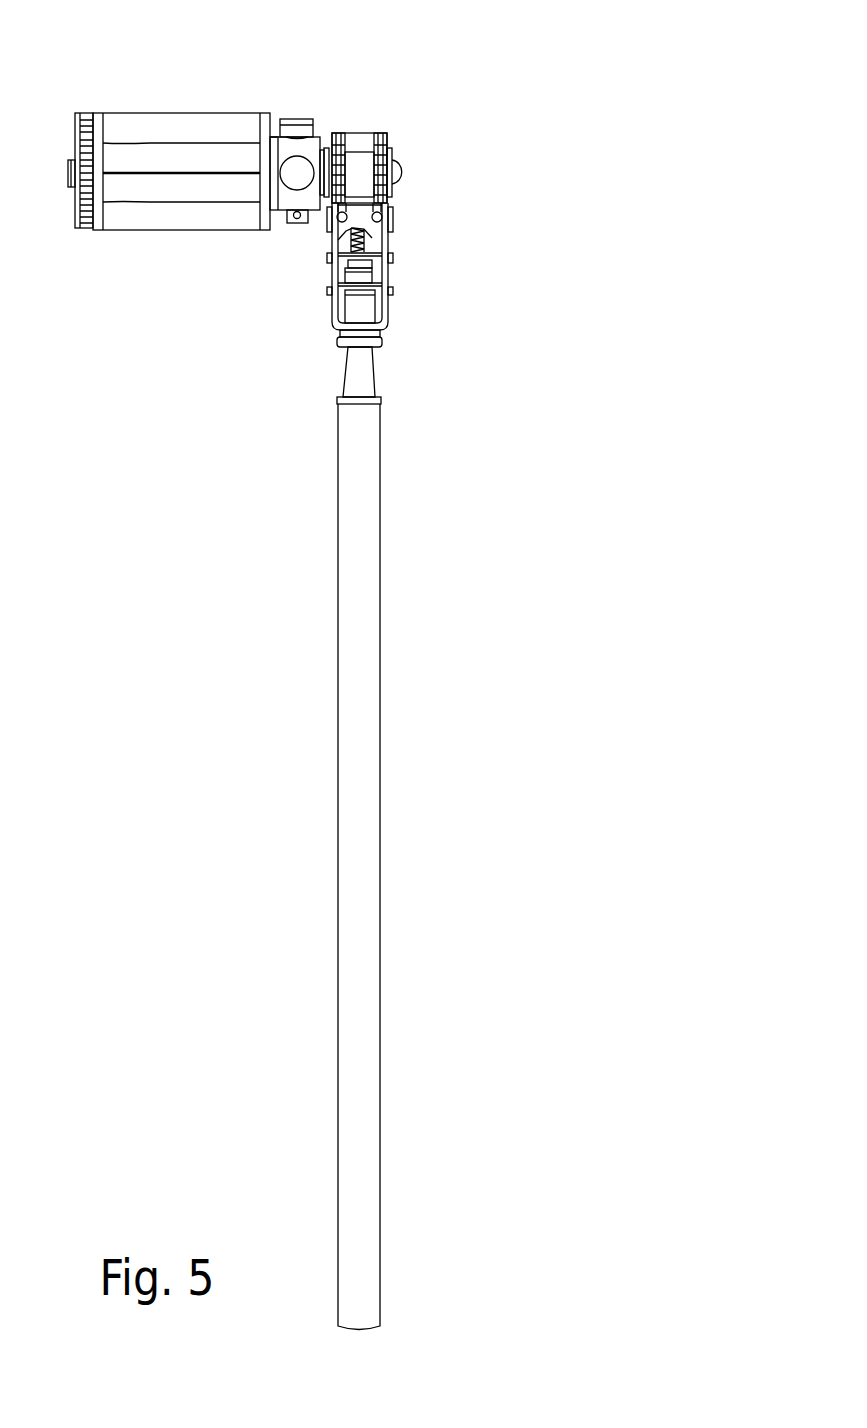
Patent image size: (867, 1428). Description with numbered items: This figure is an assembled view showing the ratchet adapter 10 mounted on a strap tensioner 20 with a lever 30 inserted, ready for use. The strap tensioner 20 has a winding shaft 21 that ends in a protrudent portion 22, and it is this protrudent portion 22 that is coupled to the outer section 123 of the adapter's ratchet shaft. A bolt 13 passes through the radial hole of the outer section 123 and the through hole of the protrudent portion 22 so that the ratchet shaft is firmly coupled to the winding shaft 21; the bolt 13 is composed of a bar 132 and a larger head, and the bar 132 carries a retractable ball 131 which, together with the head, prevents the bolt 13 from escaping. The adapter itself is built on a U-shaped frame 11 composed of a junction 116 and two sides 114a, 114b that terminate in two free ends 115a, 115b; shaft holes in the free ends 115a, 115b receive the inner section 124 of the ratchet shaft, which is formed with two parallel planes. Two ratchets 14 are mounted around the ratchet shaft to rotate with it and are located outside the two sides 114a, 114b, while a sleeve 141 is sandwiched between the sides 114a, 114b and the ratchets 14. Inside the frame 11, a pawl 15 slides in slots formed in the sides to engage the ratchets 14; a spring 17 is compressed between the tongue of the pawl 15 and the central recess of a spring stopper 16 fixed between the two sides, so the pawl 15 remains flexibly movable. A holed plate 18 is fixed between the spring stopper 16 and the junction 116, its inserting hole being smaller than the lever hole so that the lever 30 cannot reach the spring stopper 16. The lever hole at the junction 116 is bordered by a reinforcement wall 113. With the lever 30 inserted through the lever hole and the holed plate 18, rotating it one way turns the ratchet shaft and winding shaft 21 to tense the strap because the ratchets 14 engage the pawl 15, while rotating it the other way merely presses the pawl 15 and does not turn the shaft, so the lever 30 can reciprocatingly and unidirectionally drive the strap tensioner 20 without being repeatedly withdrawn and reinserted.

The ratchet adapter 10 is at (452, 192).
The frame 11 is at (391, 313).
The bolt 13 is at (290, 118).
The ratchet 14 is at (383, 132).
The pawl 15 is at (382, 217).
The spring stopper 16 is at (373, 264).
The spring 17 is at (365, 232).
The holed plate 18 is at (370, 288).
The strap tensioner 20 is at (135, 240).
The winding shaft 21 is at (172, 202).
The protrudent portion 22 is at (277, 155).
The lever 30 is at (330, 818).
The reinforcement wall 113 is at (383, 340).
The side 114a is at (332, 272).
The side 114b is at (393, 303).
The free end 115a is at (329, 133).
The free end 115b is at (386, 133).
The junction 116 is at (352, 333).
The outer section 123 is at (393, 155).
The inner section 124 is at (401, 170).
The retractable ball 131 is at (297, 219).
The bar 132 is at (287, 210).
The sleeve 141 is at (358, 165).